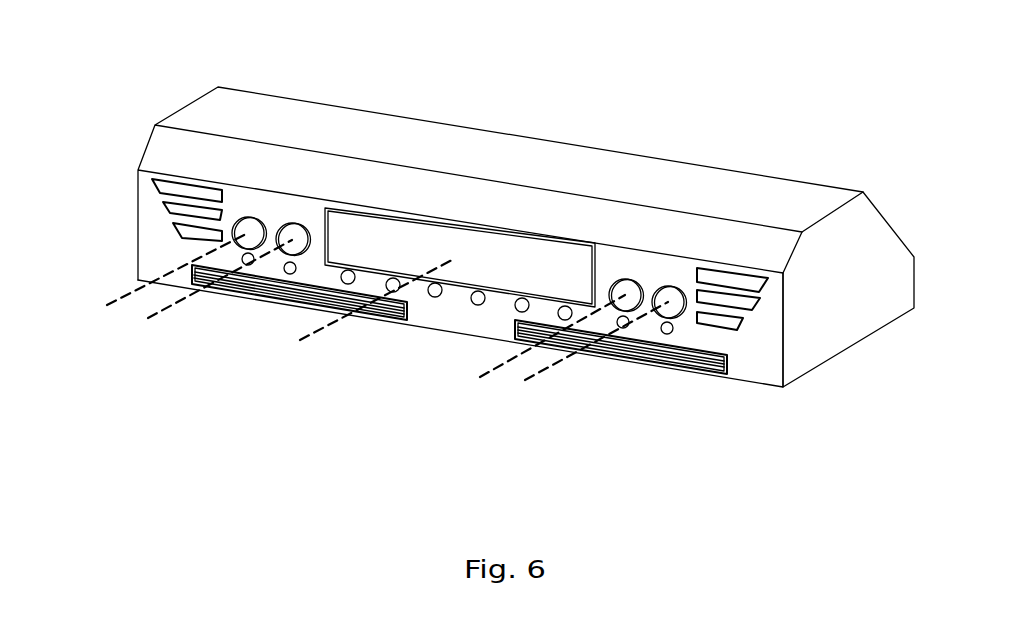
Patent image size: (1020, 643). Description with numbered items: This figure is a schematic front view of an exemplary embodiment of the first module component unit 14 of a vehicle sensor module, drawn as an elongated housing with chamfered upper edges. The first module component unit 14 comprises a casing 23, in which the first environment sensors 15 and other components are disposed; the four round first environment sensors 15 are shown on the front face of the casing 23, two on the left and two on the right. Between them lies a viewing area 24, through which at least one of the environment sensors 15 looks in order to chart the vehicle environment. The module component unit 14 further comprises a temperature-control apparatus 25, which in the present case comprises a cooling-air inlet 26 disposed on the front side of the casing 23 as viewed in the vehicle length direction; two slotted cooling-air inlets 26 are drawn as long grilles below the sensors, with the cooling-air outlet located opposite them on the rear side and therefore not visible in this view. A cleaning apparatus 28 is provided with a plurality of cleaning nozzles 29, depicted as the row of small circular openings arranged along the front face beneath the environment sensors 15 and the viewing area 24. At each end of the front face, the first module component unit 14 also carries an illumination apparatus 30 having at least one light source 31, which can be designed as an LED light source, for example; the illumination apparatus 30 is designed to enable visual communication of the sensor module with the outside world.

The first module component unit 14 is at (407, 128).
The first environment sensors 15 is at (245, 232).
The casing 23 is at (775, 187).
The viewing area 24 is at (500, 255).
The temperature-control apparatus 25 is at (255, 288).
The cooling-air inlet 26 is at (303, 300).
The cleaning apparatus 28 is at (438, 309).
The cleaning nozzles 29 is at (348, 277).
The illumination apparatus 30 is at (155, 212).
The light source 31 is at (197, 215).